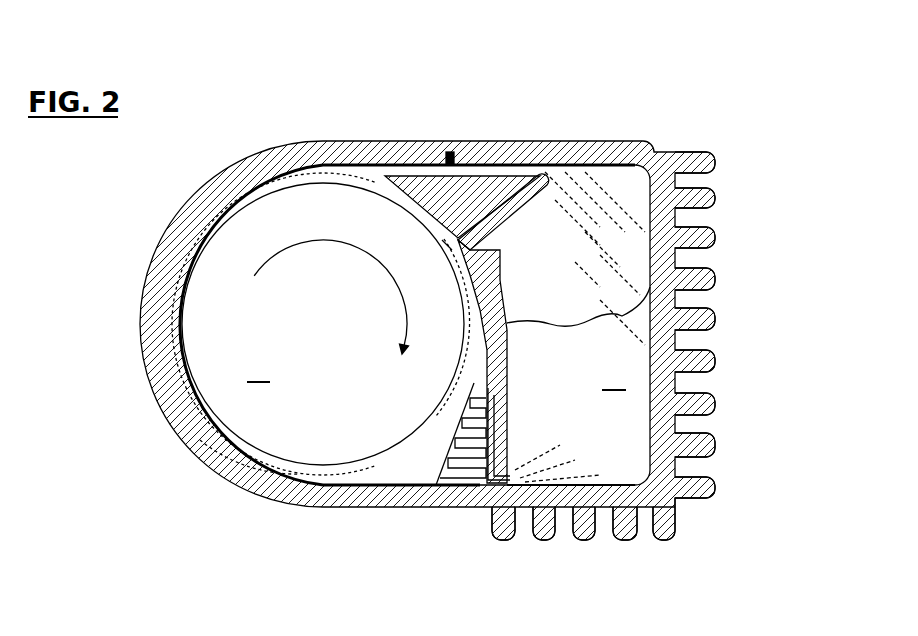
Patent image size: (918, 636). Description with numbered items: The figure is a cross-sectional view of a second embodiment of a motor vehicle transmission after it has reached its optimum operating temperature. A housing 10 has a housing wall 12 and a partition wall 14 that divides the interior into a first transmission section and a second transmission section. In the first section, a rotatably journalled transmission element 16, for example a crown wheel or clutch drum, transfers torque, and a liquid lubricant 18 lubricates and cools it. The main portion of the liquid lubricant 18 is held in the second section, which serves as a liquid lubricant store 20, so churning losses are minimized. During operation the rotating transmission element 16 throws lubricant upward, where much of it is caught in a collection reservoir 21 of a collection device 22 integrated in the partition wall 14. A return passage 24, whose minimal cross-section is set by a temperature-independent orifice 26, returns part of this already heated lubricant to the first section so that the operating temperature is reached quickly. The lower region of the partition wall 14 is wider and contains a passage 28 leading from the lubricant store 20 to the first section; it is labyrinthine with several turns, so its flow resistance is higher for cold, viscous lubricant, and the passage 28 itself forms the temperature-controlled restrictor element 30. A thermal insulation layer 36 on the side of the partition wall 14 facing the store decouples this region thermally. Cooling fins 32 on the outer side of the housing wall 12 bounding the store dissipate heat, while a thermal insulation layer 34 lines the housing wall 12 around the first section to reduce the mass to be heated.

The housing 10 is at (140, 297).
The housing wall 12 is at (158, 255).
The partition wall 14 is at (497, 262).
The transmission element 16 is at (213, 238).
The liquid lubricant 18 is at (580, 252).
The liquid lubricant store 20 is at (600, 508).
The collection reservoir 21 is at (478, 160).
The collection device 22 is at (450, 158).
The return passage 24 is at (502, 160).
The orifice 26 is at (445, 242).
The passage 28 is at (432, 508).
The temperature-controlled restrictor element 30 is at (473, 508).
The cooling fins 32 is at (716, 400).
The thermal insulation layer 34 is at (173, 363).
The thermal insulation layer 36 is at (503, 420).